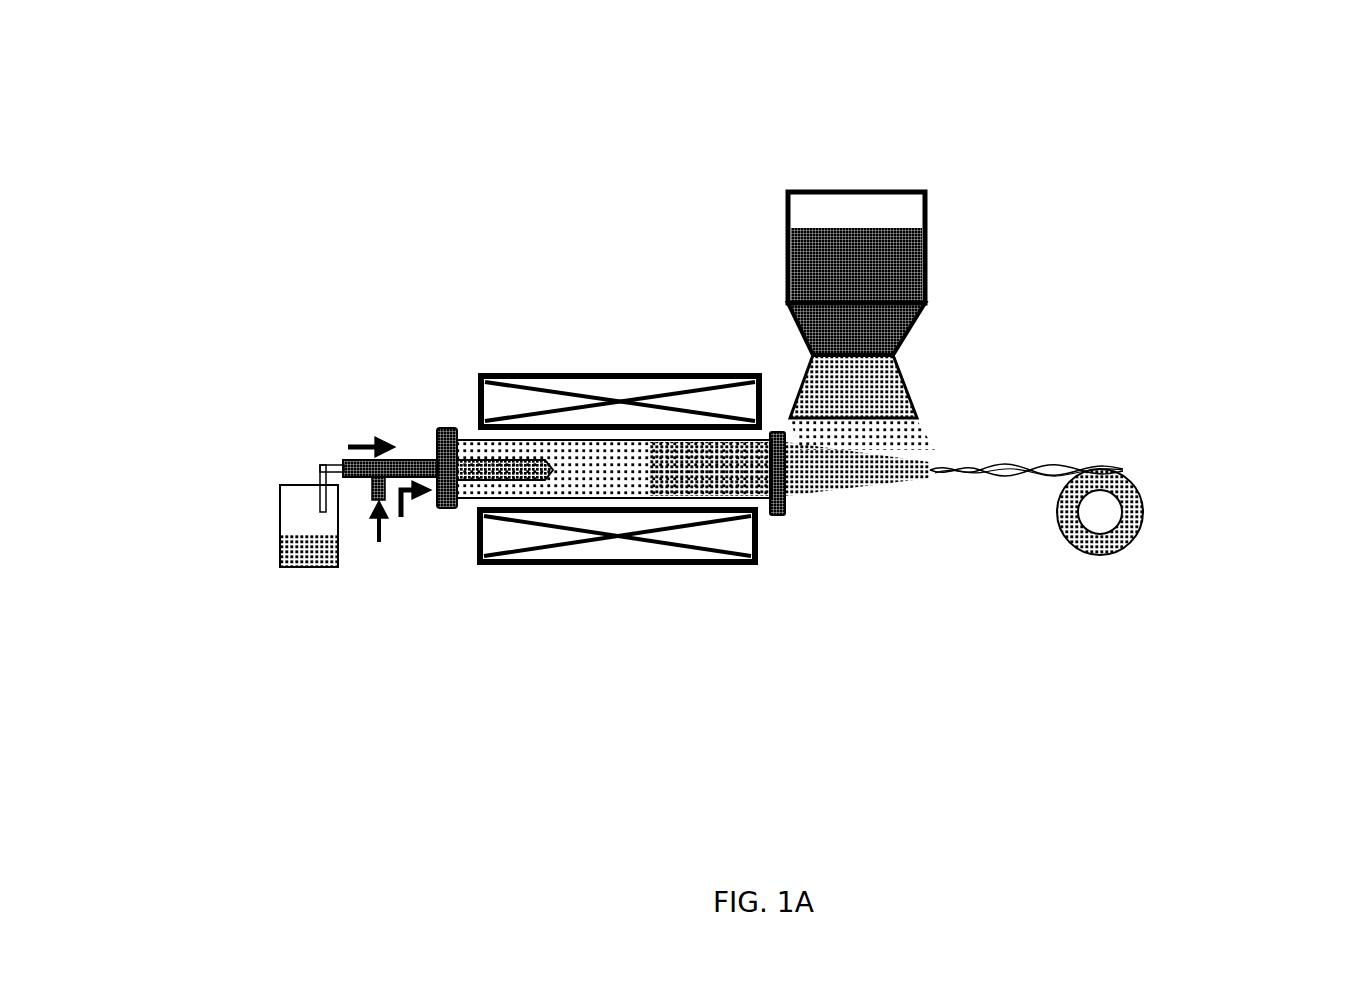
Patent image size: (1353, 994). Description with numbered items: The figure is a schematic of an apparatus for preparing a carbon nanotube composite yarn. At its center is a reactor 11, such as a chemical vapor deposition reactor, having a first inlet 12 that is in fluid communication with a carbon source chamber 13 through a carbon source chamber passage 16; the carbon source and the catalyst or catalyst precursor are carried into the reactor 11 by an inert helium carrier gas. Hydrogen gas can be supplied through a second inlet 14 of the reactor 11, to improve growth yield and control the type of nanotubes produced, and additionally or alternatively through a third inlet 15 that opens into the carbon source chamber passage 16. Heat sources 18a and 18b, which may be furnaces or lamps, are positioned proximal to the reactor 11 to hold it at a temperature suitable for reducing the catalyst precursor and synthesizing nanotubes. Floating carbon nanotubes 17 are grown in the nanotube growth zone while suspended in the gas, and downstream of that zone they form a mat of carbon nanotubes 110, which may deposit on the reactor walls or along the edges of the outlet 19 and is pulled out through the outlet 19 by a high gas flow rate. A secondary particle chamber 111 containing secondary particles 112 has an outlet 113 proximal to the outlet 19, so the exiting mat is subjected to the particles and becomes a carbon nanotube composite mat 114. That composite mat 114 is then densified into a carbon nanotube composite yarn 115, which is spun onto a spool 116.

The reactor 11 is at (473, 433).
The first inlet 12 is at (437, 457).
The carbon source chamber 13 is at (287, 505).
The second inlet 14 is at (423, 493).
The third inlet 15 is at (383, 510).
The carbon source chamber passage 16 is at (343, 465).
The floating carbon nanotubes 17 is at (663, 482).
The heat source 18a is at (643, 385).
The heat source 18b is at (675, 538).
The outlet 19 is at (777, 427).
The mat of carbon nanotubes 110 is at (783, 497).
The secondary particle chamber 111 is at (862, 210).
The secondary particles 112 is at (908, 259).
The outlet 113 is at (898, 408).
The carbon nanotube composite mat 114 is at (932, 465).
The carbon nanotube composite yarn 115 is at (1010, 498).
The spool 116 is at (1133, 482).